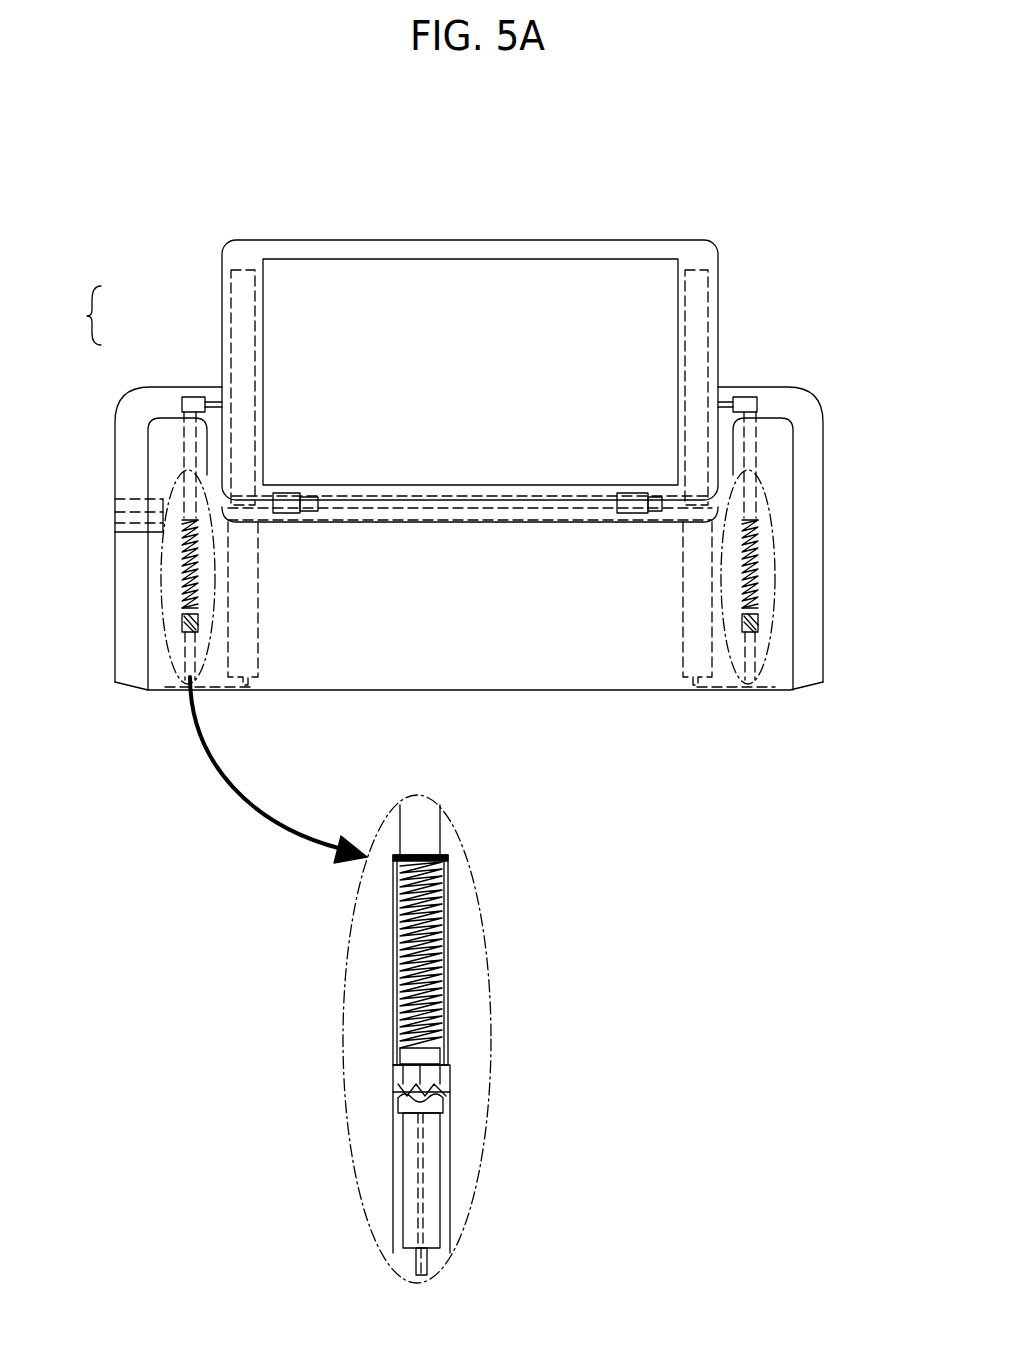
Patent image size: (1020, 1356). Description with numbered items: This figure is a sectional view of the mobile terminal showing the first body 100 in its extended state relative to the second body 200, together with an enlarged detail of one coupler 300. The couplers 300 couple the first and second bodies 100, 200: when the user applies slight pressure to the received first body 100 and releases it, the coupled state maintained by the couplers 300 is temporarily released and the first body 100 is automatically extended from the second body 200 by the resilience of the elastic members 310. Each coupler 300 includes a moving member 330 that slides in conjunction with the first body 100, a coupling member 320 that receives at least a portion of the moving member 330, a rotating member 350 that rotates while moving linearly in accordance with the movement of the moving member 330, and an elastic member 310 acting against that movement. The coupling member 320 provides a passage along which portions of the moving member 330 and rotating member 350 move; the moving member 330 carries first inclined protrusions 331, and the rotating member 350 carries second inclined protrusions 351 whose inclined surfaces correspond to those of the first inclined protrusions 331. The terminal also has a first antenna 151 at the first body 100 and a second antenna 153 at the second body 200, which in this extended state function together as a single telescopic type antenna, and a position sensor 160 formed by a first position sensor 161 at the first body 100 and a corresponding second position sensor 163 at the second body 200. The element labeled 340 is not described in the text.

The first body 100 is at (488, 230).
The first antenna 151 is at (709, 325).
The second antenna 153 is at (708, 519).
The position sensor 160 is at (75, 315).
The first position sensor 161 is at (232, 300).
The second position sensor 163 is at (229, 540).
The second body 200 is at (835, 486).
The coupler 300 is at (150, 627).
The elastic member 310 is at (182, 597).
The coupling member 320 is at (450, 874).
The moving member 330 is at (757, 405).
The first inclined protrusion 331 is at (432, 1078).
The piston 340 is at (436, 1054).
The rotating member 350 is at (437, 1105).
The second inclined protrusion 351 is at (398, 1110).